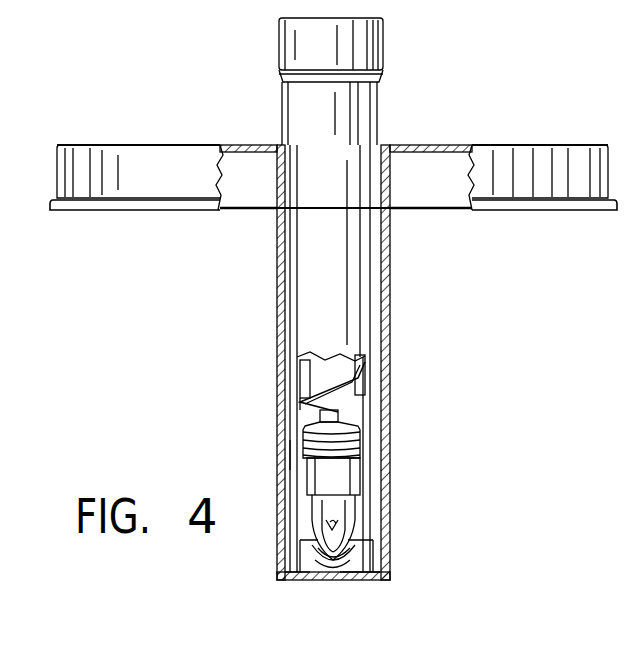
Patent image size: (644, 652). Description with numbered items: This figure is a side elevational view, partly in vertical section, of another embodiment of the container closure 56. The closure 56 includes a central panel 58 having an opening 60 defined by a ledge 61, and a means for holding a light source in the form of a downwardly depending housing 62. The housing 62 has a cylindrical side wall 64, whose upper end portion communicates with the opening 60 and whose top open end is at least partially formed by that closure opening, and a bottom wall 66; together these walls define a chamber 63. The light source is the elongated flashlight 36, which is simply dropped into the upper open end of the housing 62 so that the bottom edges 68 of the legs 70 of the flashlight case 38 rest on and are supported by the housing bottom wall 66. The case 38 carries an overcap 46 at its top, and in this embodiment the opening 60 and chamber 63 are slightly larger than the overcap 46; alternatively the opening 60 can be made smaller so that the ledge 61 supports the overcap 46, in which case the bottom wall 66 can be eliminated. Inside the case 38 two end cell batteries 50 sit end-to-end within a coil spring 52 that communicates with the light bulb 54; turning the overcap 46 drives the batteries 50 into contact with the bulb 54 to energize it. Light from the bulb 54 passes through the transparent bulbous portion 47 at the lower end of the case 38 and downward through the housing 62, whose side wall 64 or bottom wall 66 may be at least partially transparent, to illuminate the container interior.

The elongated flashlight 36 is at (322, 230).
The flashlight case 38 is at (375, 418).
The overcap 46 is at (282, 38).
The bulbous portion 47 is at (323, 565).
The end cell batteries 50 is at (300, 375).
The coil spring 52 is at (365, 393).
The light bulb 54 is at (355, 505).
The closure 56 is at (108, 112).
The central panel 58 is at (203, 122).
The opening 60 is at (368, 145).
The ledge 61 is at (390, 150).
The housing 62 is at (276, 273).
The chamber 63 is at (298, 413).
The cylindrical side wall 64 is at (290, 458).
The bottom wall 66 is at (360, 578).
The bottom edges 68 is at (292, 580).
The legs 70 is at (378, 548).